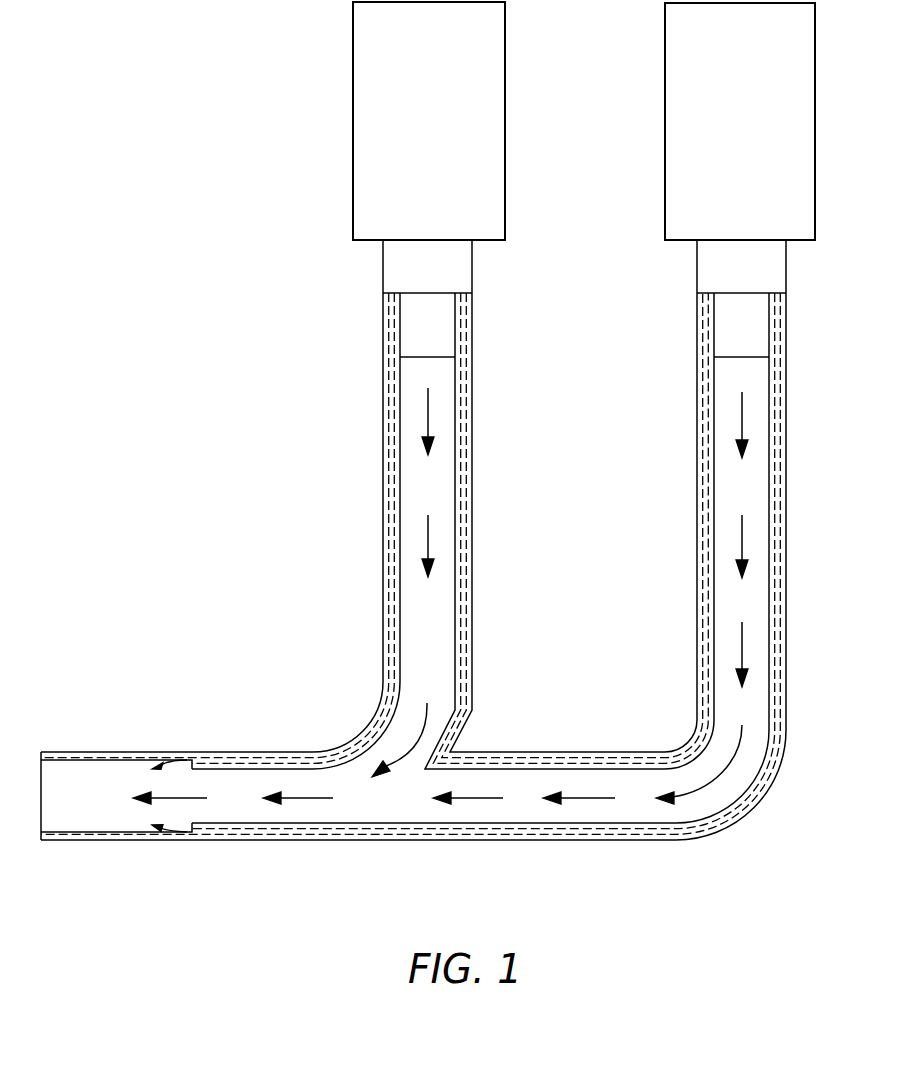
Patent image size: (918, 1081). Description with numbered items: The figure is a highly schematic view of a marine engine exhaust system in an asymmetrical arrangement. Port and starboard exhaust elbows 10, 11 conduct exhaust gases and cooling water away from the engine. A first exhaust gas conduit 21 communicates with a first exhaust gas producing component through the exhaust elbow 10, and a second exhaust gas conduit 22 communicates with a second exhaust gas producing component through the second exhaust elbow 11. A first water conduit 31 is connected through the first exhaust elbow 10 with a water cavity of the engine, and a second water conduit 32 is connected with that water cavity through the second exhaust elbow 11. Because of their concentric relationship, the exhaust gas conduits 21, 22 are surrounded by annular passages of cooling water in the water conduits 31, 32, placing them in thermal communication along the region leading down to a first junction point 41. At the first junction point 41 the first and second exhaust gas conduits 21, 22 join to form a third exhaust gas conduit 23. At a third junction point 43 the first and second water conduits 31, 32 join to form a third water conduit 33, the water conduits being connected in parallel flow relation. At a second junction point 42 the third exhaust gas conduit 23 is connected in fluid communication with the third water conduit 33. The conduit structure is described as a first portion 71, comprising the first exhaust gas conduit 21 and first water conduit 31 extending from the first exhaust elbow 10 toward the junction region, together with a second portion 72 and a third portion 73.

The port exhaust elbow 10 is at (443, 145).
The starboard exhaust elbow 11 is at (753, 145).
The first exhaust gas conduit 21 is at (416, 477).
The second exhaust gas conduit 22 is at (742, 482).
The third exhaust gas conduit 23 is at (230, 790).
The first water conduit 31 is at (393, 322).
The second water conduit 32 is at (778, 312).
The third water conduit 33 is at (283, 752).
The first junction point 41 is at (364, 793).
The second junction point 42 is at (165, 813).
The third junction point 43 is at (445, 752).
The first portion 71 is at (476, 455).
The second portion 72 is at (788, 397).
The third portion 73 is at (258, 842).